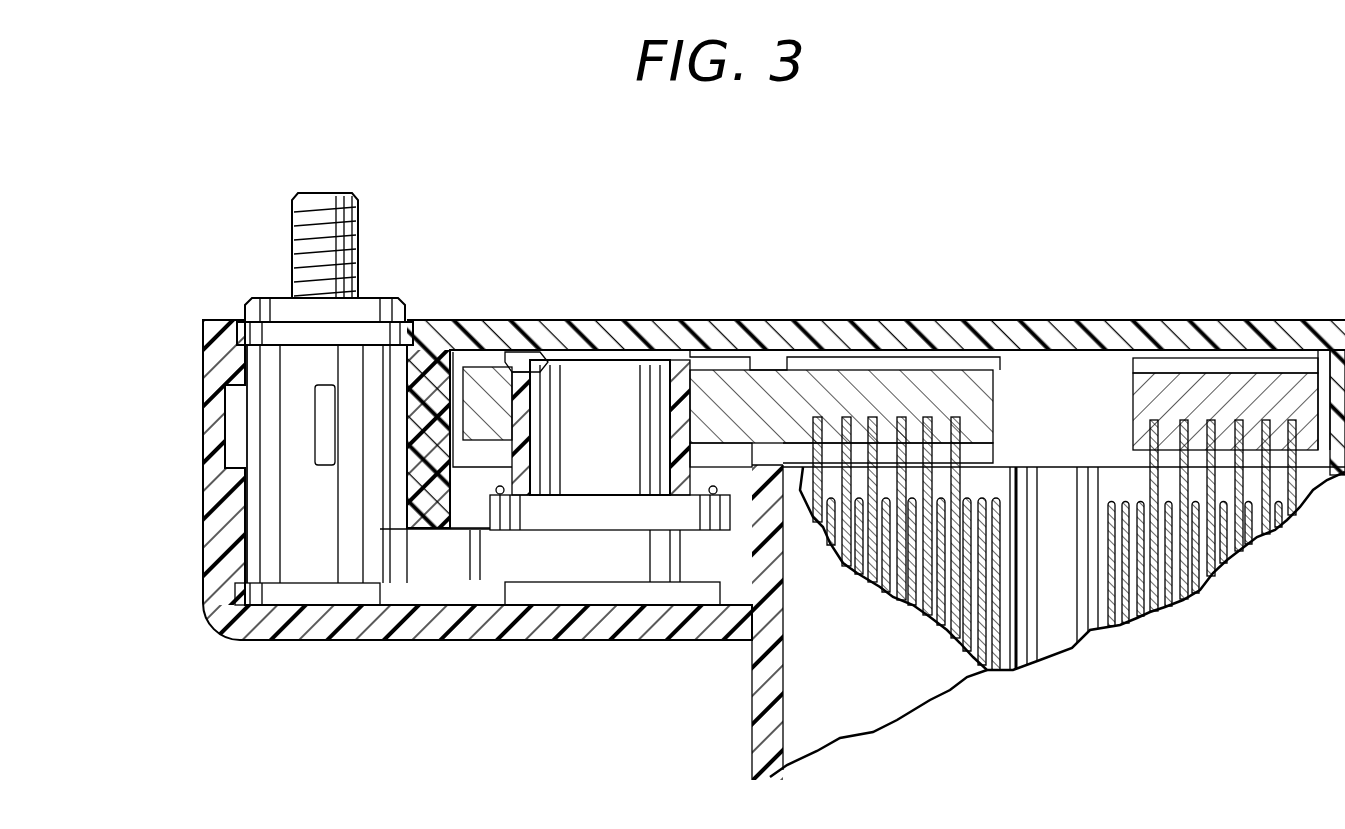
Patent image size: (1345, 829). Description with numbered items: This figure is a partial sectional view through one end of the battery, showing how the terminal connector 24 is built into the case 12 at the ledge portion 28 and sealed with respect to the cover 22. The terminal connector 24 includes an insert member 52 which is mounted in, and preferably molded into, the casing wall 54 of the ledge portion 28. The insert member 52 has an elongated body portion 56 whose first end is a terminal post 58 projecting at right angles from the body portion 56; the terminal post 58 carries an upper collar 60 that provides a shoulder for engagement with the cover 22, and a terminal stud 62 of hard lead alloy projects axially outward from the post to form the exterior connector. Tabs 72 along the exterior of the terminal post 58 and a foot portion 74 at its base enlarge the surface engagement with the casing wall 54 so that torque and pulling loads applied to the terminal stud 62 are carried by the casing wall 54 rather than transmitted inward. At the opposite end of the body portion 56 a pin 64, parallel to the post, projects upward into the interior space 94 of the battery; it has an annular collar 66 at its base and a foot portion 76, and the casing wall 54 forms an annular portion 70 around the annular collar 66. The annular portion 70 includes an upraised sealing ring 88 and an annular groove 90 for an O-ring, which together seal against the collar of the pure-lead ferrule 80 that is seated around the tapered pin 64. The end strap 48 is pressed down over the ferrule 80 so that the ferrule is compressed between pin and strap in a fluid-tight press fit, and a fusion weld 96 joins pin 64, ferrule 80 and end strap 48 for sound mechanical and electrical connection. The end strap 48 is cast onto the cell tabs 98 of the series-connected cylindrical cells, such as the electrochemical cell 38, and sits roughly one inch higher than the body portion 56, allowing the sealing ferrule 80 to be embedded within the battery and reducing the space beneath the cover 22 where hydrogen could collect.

The case 12 is at (198, 476).
The cover 22 is at (598, 395).
The terminal connector 24 is at (290, 235).
The ledge portion 28 is at (325, 648).
The electrochemical cell 38 is at (985, 480).
The end strap 48 is at (848, 395).
The insert member 52 is at (397, 572).
The casing wall 54 is at (578, 620).
The body portion 56 is at (497, 572).
The terminal post 58 is at (297, 372).
The upper collar 60 is at (358, 330).
The terminal stud 62 is at (315, 222).
The pin 64 is at (627, 322).
The annular collar 66 is at (585, 515).
The annular portion 70 is at (500, 494).
The tabs 72 is at (235, 428).
The foot portion 74 is at (300, 595).
The foot portion 76 is at (684, 582).
The ferrule 80 is at (690, 345).
The sealing ring 88 is at (497, 505).
The annular groove 90 is at (470, 535).
The interior space 94 is at (1097, 393).
The fusion weld 96 is at (520, 352).
The cell tabs 98 is at (978, 488).